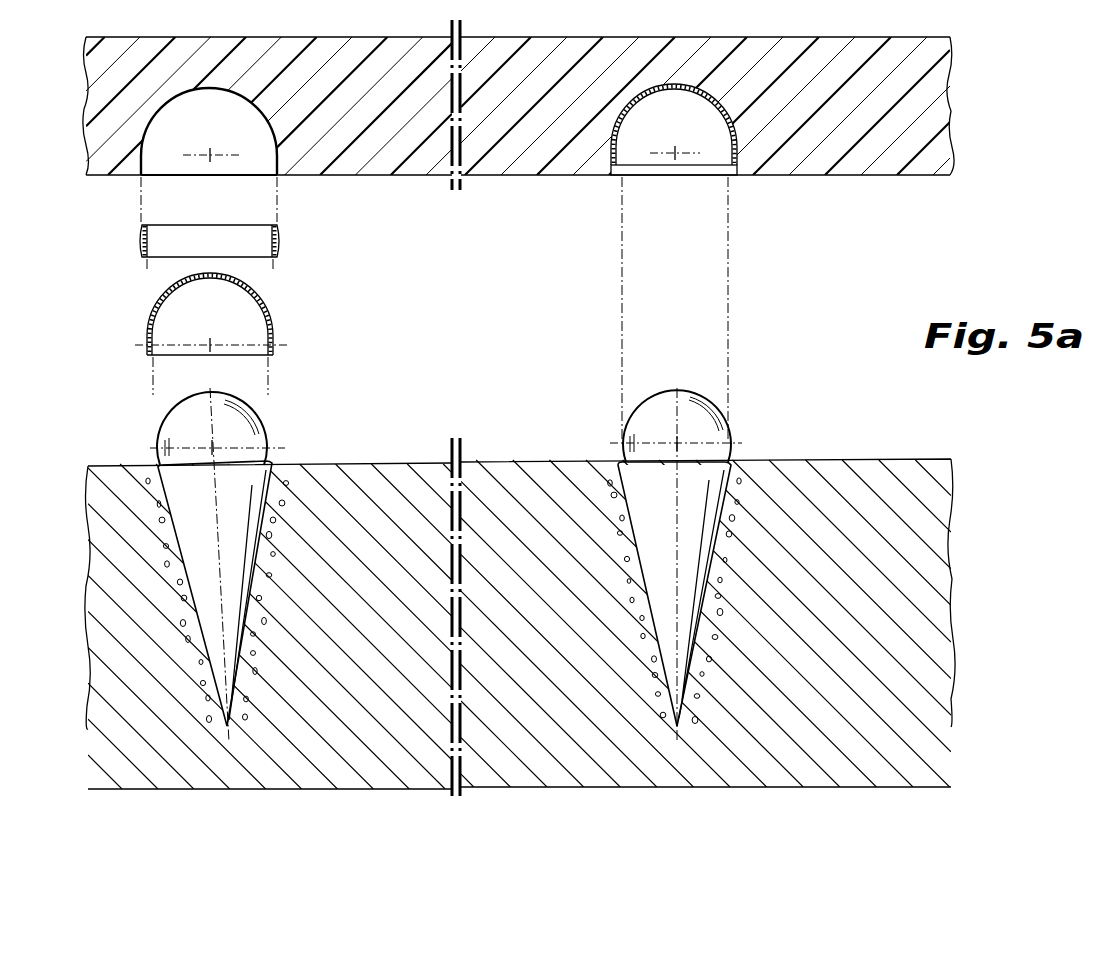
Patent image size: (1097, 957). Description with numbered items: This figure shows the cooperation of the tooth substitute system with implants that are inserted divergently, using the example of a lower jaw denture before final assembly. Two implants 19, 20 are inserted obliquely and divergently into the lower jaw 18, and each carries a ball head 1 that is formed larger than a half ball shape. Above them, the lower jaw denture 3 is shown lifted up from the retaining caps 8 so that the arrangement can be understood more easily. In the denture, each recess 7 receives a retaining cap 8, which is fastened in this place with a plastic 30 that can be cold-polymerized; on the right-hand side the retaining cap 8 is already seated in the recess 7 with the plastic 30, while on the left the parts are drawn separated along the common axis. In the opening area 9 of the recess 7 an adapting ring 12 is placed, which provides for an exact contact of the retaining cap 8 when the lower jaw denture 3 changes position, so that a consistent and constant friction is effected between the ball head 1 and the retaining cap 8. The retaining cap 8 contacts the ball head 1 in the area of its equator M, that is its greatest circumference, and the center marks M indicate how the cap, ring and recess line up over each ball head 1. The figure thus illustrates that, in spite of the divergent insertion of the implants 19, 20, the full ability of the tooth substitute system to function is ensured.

The ball head 1 is at (174, 417).
The lower jaw denture 3 is at (935, 145).
The recess 7 is at (222, 90).
The retaining cap 8 is at (273, 318).
The opening area 9 is at (247, 163).
The adapting ring 12 is at (279, 242).
The lower jaw 18 is at (913, 475).
The implant 19 is at (176, 516).
The implant 20 is at (716, 490).
The plastic 30 is at (652, 86).
The equator M is at (213, 152).